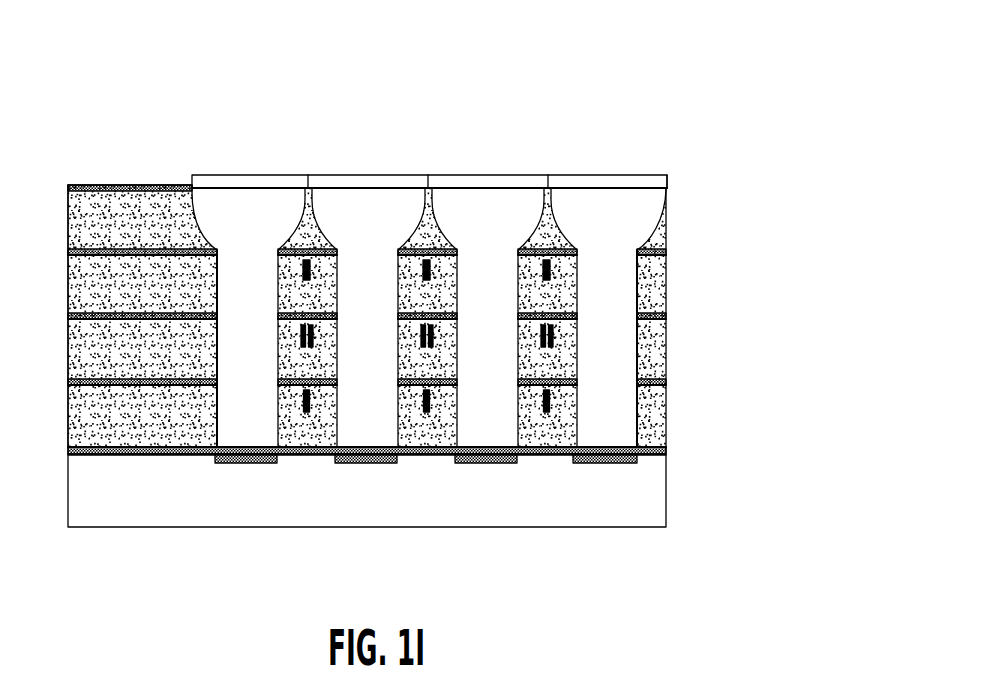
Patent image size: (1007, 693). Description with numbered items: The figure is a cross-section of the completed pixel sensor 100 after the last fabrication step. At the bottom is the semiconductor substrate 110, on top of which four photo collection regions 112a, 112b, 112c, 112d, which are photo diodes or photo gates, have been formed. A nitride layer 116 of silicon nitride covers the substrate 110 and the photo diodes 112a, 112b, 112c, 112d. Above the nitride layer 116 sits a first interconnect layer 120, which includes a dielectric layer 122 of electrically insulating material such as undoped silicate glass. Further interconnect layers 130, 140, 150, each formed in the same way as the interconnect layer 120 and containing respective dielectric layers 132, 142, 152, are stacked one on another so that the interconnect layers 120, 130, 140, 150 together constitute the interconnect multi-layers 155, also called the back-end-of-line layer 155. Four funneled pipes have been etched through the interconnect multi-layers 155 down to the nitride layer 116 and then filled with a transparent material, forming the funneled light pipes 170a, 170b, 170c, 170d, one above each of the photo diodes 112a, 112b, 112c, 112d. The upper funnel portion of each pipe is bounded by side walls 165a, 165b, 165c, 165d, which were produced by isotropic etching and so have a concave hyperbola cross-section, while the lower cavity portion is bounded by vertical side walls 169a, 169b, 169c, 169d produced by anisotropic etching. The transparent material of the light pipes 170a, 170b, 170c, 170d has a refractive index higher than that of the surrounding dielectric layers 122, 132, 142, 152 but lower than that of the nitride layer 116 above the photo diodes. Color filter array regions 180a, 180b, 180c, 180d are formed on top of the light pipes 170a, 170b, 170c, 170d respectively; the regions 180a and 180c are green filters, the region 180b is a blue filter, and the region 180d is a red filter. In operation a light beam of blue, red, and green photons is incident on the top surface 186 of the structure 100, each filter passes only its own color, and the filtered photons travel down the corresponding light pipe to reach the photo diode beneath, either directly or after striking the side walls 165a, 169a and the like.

The pixel sensor 100 is at (652, 103).
The semiconductor substrate 110 is at (77, 484).
The photo collection region 112a is at (255, 464).
The photo collection region 112b is at (360, 464).
The photo collection region 112c is at (490, 464).
The photo collection region 112d is at (612, 464).
The nitride layer 116 is at (667, 457).
The interconnect layer 120 is at (63, 385).
The dielectric layer 122 is at (660, 432).
The interconnect layer 130 is at (63, 319).
The dielectric layer 132 is at (660, 366).
The interconnect layer 140 is at (63, 255).
The dielectric layer 142 is at (656, 289).
The interconnect layer 150 is at (63, 188).
The dielectric layer 152 is at (667, 240).
The interconnect multi-layers 155 is at (728, 188).
The side wall 165a is at (300, 223).
The side wall 165b is at (425, 225).
The side wall 165c is at (441, 224).
The side wall 165d is at (557, 235).
The side wall 169a is at (216, 390).
The side wall 169b is at (397, 413).
The side wall 169c is at (457, 400).
The side wall 169d is at (573, 403).
The funneled light pipe 170a is at (272, 318).
The funneled light pipe 170b is at (392, 318).
The funneled light pipe 170c is at (510, 318).
The funneled light pipe 170d is at (630, 318).
The CFA region 180a is at (278, 182).
The CFA region 180b is at (352, 184).
The CFA region 180c is at (498, 183).
The CFA region 180d is at (605, 183).
The surface 186 is at (220, 173).